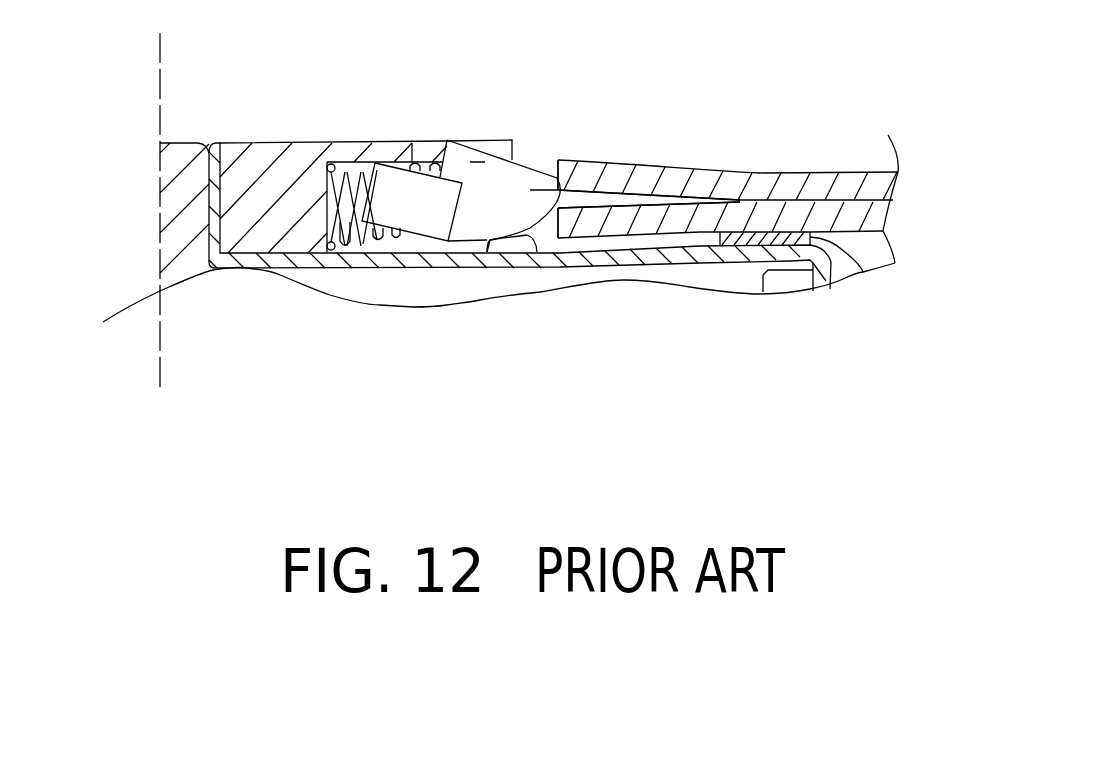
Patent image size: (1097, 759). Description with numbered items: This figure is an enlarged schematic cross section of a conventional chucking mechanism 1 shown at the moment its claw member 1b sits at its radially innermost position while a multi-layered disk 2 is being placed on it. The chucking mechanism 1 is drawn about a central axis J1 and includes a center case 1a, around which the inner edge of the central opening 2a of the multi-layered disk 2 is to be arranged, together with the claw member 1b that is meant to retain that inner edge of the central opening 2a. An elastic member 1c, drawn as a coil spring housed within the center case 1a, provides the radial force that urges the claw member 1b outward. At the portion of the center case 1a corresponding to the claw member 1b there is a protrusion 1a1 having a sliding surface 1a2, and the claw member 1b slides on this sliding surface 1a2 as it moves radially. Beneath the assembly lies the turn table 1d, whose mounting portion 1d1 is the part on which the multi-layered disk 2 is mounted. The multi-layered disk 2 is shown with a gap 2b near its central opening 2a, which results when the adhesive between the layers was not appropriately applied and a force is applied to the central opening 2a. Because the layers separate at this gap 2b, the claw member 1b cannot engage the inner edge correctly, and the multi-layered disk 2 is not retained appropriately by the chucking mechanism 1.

The axis line J1 is at (160, 68).
The chucking mechanism 1 is at (409, 112).
The center case 1a is at (277, 180).
The protrusion 1a1 is at (502, 243).
The sliding surface 1a2 is at (518, 237).
The claw member 1b is at (473, 218).
The elastic member 1c is at (343, 232).
The turn table 1d is at (708, 279).
The mounting portion 1d1 is at (863, 272).
The multi-layered disk 2 is at (765, 152).
The central opening 2a is at (565, 187).
The gap 2b is at (572, 203).